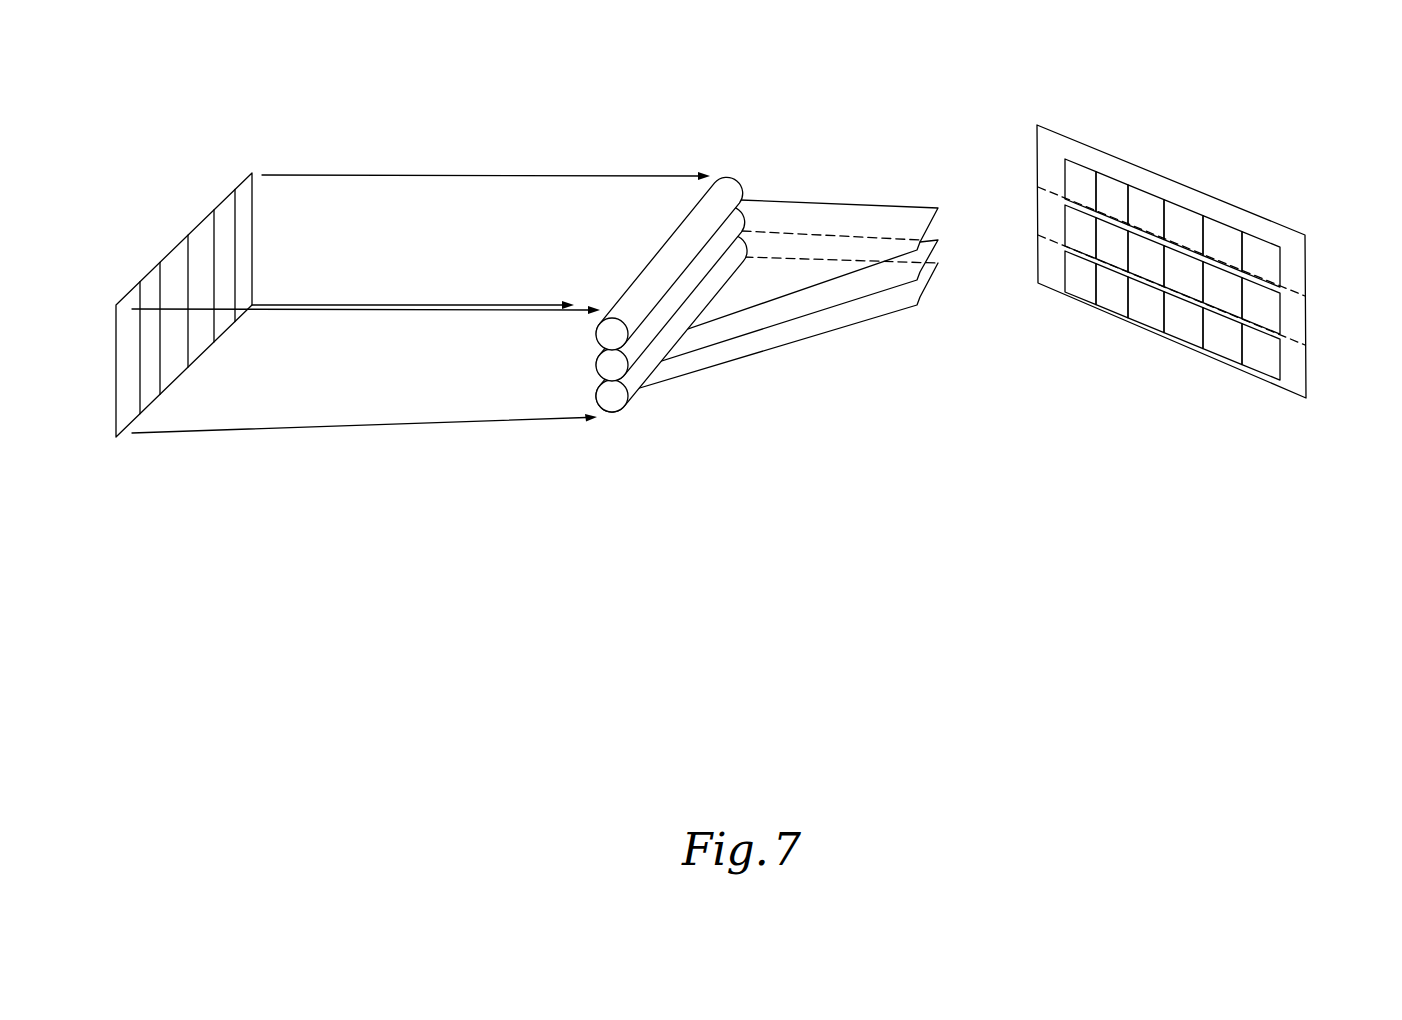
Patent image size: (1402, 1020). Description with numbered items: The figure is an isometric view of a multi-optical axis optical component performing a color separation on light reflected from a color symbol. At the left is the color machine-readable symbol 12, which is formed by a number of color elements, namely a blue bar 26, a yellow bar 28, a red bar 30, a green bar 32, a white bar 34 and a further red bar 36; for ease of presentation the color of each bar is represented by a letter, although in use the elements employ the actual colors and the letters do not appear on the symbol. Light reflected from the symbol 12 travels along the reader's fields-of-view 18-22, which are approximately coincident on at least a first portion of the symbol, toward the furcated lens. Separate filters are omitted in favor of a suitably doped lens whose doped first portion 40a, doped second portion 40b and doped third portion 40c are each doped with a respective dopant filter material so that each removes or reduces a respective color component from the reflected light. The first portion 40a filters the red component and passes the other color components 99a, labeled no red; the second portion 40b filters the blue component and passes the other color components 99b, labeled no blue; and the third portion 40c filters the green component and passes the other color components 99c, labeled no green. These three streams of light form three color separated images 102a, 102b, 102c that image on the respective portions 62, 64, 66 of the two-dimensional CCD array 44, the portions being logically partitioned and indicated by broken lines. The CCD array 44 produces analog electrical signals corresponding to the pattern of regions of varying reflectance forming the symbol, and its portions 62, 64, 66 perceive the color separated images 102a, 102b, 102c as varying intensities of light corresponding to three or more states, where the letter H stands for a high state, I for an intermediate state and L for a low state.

The color machine-readable symbol 12 is at (99, 428).
The blue bar 26 is at (126, 294).
The yellow bar 28 is at (148, 273).
The red bar 30 is at (173, 247).
The green bar 32 is at (203, 217).
The white bar 34 is at (225, 196).
The red bar 36 is at (252, 174).
The fields-of-view 18-22 is at (610, 455).
The doped first portion of the furcated lens 40a is at (597, 337).
The doped second portion of the furcated lens 40b is at (597, 363).
The doped third portion of the furcated lens 40c is at (597, 392).
The other color components passed by first portion 99a is at (748, 196).
The other color components passed by second portion 99b is at (707, 350).
The other color components passed by third portion 99c is at (807, 343).
The two-dimensional CCD array 44 is at (1180, 186).
The first portion of the two-dimensional CCD array 62 is at (1037, 165).
The second portion of the two-dimensional CCD array 64 is at (1037, 217).
The third portion of the two-dimensional CCD array 66 is at (1037, 263).
The first color separated image 102a is at (1148, 184).
The second color separated image 102b is at (1300, 320).
The third color separated image 102c is at (1305, 364).